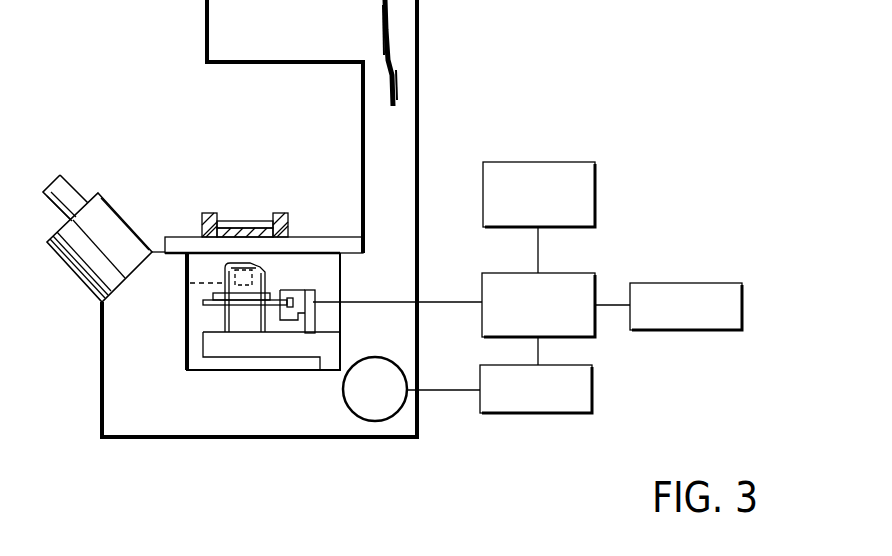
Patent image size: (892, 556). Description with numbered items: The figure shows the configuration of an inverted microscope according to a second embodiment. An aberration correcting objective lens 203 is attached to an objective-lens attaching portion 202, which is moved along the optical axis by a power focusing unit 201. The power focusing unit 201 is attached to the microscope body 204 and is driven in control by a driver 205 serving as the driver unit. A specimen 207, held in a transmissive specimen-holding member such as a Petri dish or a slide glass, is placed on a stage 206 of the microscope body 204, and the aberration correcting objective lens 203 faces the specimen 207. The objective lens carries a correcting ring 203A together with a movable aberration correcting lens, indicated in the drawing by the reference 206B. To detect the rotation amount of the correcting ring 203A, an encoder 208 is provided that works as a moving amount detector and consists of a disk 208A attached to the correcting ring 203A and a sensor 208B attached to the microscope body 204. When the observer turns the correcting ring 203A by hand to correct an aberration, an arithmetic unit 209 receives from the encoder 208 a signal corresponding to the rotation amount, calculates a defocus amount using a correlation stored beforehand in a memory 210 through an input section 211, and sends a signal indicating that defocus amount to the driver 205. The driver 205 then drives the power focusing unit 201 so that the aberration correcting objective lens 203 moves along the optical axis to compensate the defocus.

The power focusing unit 201 is at (353, 412).
The objective-lens attaching portion 202 is at (250, 357).
The aberration correcting objective lens 203 is at (232, 318).
The correcting ring 203A is at (203, 303).
The microscope body 204 is at (365, 437).
The driver 205 is at (593, 392).
The stage 206 is at (195, 237).
The stage opening 206B is at (190, 283).
The specimen 207 is at (243, 221).
The encoder 208 is at (357, 160).
The disk 208A is at (280, 288).
The sensor 208B is at (298, 288).
The arithmetic unit 209 is at (583, 283).
The memory 210 is at (743, 307).
The input section 211 is at (597, 197).